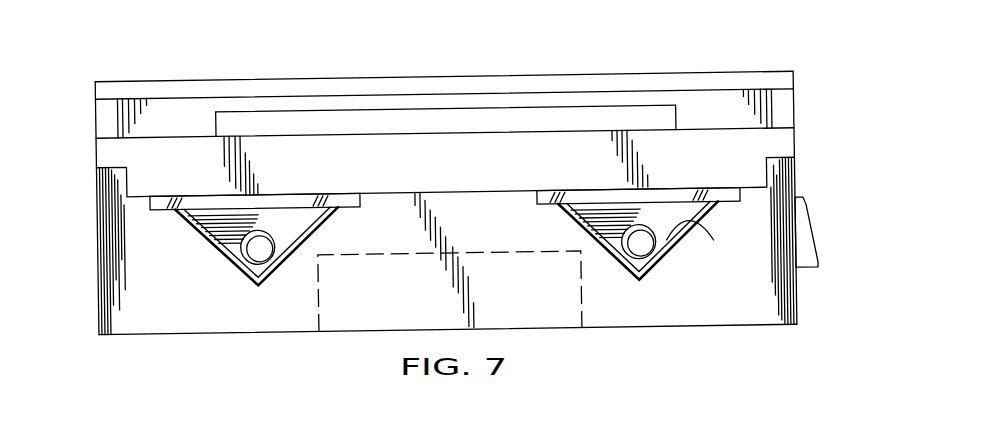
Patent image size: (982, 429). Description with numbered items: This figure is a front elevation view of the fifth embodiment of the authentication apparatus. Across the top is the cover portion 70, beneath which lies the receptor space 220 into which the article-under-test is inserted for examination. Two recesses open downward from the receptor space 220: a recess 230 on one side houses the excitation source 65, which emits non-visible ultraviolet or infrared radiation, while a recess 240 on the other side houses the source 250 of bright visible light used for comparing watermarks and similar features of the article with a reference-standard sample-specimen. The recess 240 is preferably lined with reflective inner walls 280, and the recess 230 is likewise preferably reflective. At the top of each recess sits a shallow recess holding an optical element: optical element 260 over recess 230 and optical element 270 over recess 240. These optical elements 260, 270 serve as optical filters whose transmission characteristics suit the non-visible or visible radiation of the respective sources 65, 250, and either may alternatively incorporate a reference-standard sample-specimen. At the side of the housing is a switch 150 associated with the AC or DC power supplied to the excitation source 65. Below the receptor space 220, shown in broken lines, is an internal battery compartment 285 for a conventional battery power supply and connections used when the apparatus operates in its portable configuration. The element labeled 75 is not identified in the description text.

The cover portion 70 is at (660, 83).
The inner plate 75 is at (332, 116).
The receptor space 220 is at (458, 172).
The optical element 260 is at (222, 190).
The optical element 270 is at (580, 190).
The recess 230 is at (290, 220).
The recess 240 is at (655, 213).
The excitation source 65 is at (253, 247).
The source of bright visible light 250 is at (628, 246).
The reflective inner walls 280 is at (706, 246).
The switch 150 is at (815, 252).
The internal battery compartment 285 is at (318, 303).